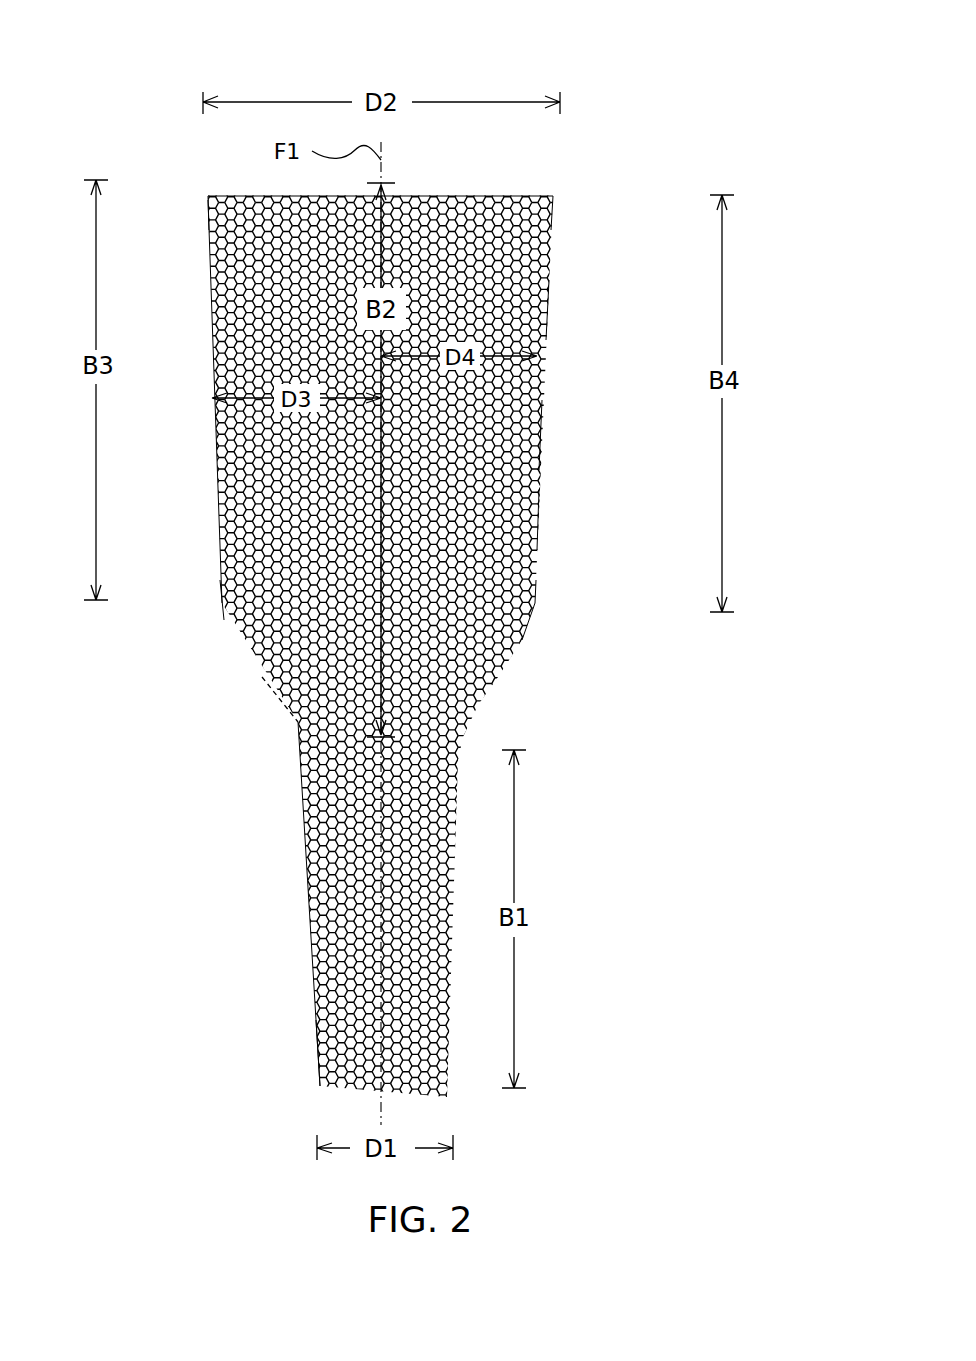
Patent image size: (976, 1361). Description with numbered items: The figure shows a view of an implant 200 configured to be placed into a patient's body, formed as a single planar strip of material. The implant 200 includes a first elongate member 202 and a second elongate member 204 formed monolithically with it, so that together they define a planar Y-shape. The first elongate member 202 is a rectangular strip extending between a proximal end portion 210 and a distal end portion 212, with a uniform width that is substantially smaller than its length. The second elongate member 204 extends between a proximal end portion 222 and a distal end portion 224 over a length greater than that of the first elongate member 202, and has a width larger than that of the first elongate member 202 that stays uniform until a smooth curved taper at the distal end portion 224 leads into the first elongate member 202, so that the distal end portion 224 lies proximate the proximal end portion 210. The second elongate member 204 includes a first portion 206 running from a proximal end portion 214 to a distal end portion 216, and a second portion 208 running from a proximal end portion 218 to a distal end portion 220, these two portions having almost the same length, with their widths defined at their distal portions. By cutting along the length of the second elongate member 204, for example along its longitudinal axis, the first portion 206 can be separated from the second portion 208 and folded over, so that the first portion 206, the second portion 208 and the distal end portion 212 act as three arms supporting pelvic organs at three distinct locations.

The implant 200 is at (90, 97).
The first elongate member 202 is at (303, 888).
The second elongate member 204 is at (418, 194).
The first portion 206 is at (222, 447).
The second portion 208 is at (533, 432).
The proximal end portion 210 is at (298, 722).
The distal end portion 212 is at (317, 1030).
The proximal end portion 214 is at (218, 204).
The distal end portion 216 is at (222, 604).
The proximal end portion 218 is at (553, 203).
The distal end portion 220 is at (535, 600).
The proximal end portion 222 is at (538, 300).
The distal end portion 224 is at (530, 512).